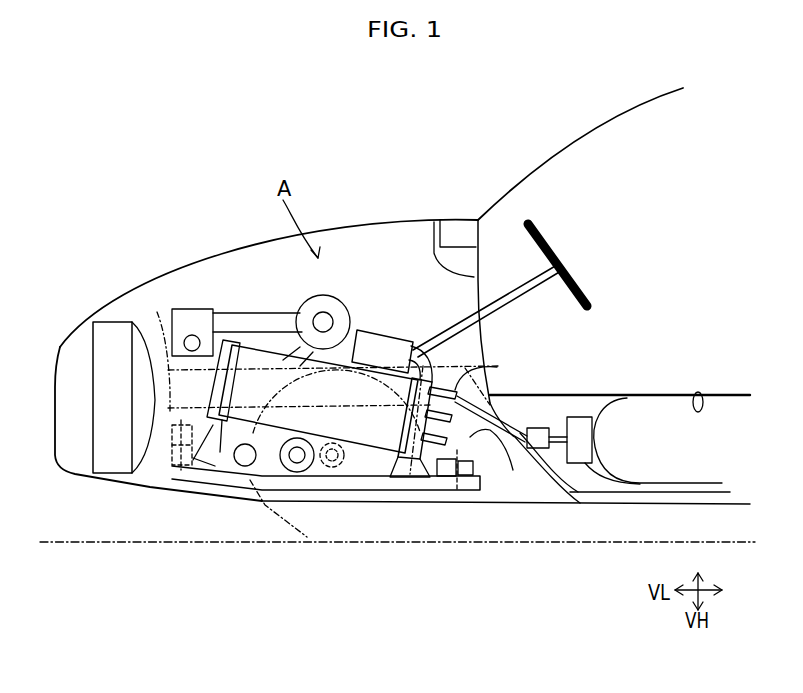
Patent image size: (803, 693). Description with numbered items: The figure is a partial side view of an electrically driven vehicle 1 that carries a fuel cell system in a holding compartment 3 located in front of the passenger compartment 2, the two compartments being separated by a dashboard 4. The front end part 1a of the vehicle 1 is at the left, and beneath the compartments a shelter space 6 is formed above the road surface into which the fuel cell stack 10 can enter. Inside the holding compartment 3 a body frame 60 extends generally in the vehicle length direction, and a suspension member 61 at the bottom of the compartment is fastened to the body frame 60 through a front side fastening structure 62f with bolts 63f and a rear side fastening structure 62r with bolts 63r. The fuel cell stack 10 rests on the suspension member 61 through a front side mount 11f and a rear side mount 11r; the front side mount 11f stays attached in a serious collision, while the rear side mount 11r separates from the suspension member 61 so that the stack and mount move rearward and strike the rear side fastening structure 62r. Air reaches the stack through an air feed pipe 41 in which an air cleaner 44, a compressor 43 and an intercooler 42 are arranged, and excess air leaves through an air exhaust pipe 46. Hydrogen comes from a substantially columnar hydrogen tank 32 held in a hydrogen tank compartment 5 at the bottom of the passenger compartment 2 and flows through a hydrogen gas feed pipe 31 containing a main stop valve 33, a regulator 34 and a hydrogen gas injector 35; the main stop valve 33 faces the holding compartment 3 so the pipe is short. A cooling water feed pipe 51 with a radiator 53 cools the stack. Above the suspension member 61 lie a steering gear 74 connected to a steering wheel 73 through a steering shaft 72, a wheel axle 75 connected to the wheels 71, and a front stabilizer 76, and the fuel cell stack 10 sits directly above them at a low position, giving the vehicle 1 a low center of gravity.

The electrically driven vehicle 1 is at (112, 108).
The front end part 1a is at (72, 330).
The passenger compartment 2 is at (650, 166).
The holding compartment 3 is at (395, 255).
The dashboard 4 is at (434, 222).
The hydrogen tank compartment 5 is at (700, 392).
The shelter space 6 is at (725, 517).
The fuel cell stack 10 is at (277, 340).
The front side mount 11f is at (203, 450).
The rear side mount 11r is at (437, 478).
The hydrogen gas feed pipe 31 is at (527, 448).
The hydrogen tank 32 is at (653, 473).
The main stop valve 33 is at (582, 463).
The regulator 34 is at (548, 448).
The hydrogen gas injector 35 is at (480, 384).
The air feed pipe 41 is at (250, 313).
The intercooler 42 is at (393, 328).
The compressor 43 is at (345, 318).
The air cleaner 44 is at (190, 309).
The air exhaust pipe 46 is at (513, 470).
The cooling water feed pipe 51 is at (497, 384).
The radiator 53 is at (137, 322).
The body frame 60 is at (320, 361).
The suspension member 61 is at (347, 483).
The front side fastening structure 62f is at (158, 460).
The rear side fastening structure 62r is at (485, 468).
The bolts 63f is at (167, 445).
The bolts 63r is at (450, 480).
The wheels 71 is at (265, 505).
The steering shaft 72 is at (497, 284).
The steering wheel 73 is at (578, 280).
The steering gear 74 is at (297, 462).
The wheel axle 75 is at (331, 466).
The front stabilizer 76 is at (245, 455).